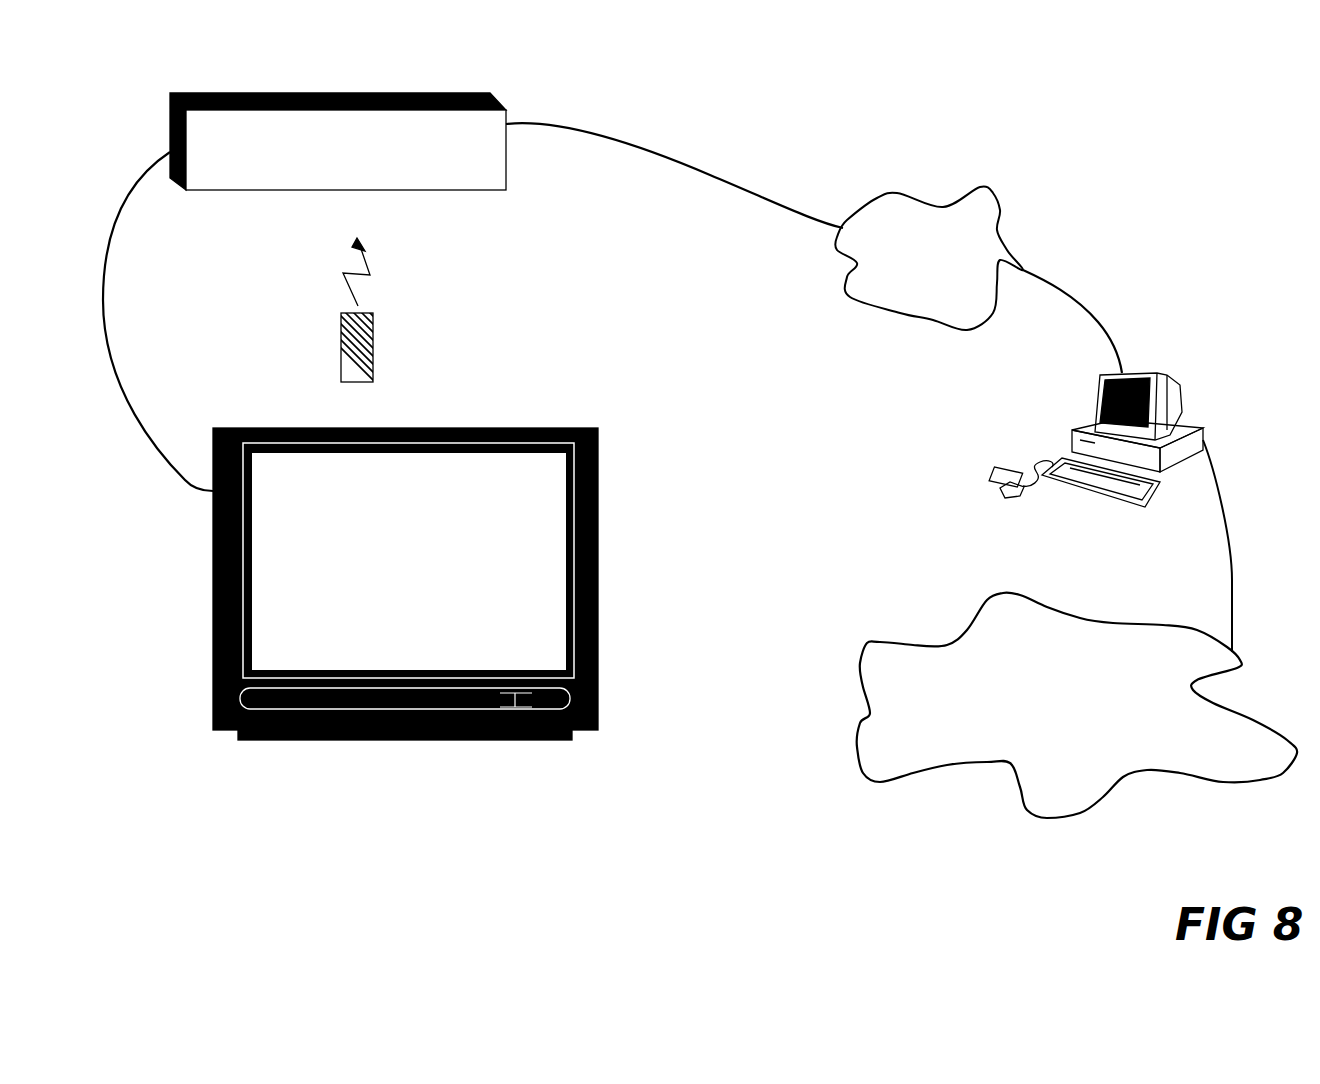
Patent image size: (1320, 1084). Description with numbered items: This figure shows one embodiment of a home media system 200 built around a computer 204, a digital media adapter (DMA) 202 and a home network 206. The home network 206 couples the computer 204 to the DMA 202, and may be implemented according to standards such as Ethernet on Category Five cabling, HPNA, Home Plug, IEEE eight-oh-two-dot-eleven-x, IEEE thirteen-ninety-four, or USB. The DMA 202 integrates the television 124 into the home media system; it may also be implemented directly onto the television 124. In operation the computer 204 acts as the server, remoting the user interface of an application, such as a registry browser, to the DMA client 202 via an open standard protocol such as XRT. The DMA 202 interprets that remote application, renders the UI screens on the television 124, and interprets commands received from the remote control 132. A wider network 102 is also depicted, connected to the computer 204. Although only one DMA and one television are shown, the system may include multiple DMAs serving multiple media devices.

The home media system 200 is at (1157, 157).
The digital media adapter 202 is at (250, 176).
The remote control 132 is at (391, 348).
The television 124 is at (212, 575).
The home network 206 is at (993, 193).
The computer 204 is at (1096, 467).
The network 102 is at (860, 722).